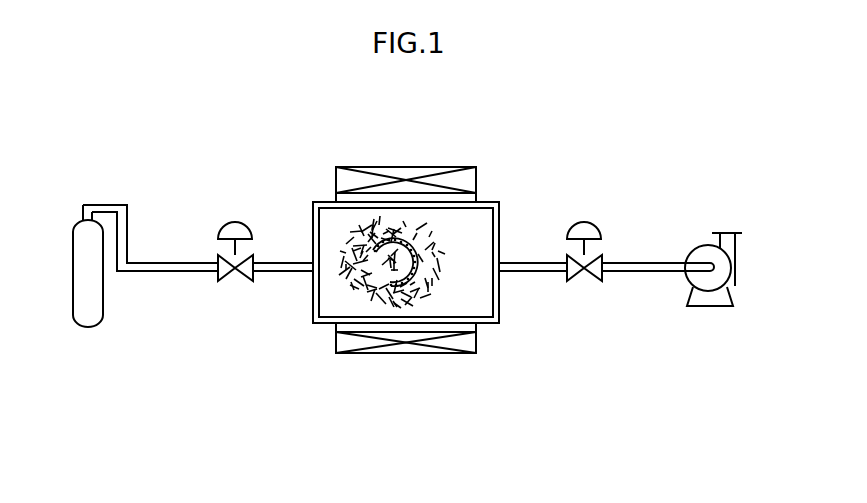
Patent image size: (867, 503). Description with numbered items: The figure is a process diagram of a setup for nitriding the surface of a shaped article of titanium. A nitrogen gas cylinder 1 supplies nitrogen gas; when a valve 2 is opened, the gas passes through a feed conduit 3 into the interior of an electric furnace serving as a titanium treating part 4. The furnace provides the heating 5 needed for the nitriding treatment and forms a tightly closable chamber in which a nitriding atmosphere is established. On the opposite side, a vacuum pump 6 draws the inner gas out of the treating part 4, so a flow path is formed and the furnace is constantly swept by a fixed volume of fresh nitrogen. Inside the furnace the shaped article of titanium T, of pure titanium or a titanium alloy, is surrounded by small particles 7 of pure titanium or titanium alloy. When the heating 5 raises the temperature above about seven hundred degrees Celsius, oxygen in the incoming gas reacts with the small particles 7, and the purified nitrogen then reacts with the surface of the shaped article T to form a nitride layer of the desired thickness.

The nitrogen gas cylinder 1 is at (78, 267).
The valve 2 is at (237, 228).
The feed conduit 3 is at (172, 272).
The titanium treating part 4 is at (311, 304).
The heating 5 is at (412, 172).
The vacuum pump 6 is at (707, 300).
The small particles of pure titanium or titanium alloy 7 is at (410, 282).
The shaped article of titanium T is at (413, 250).